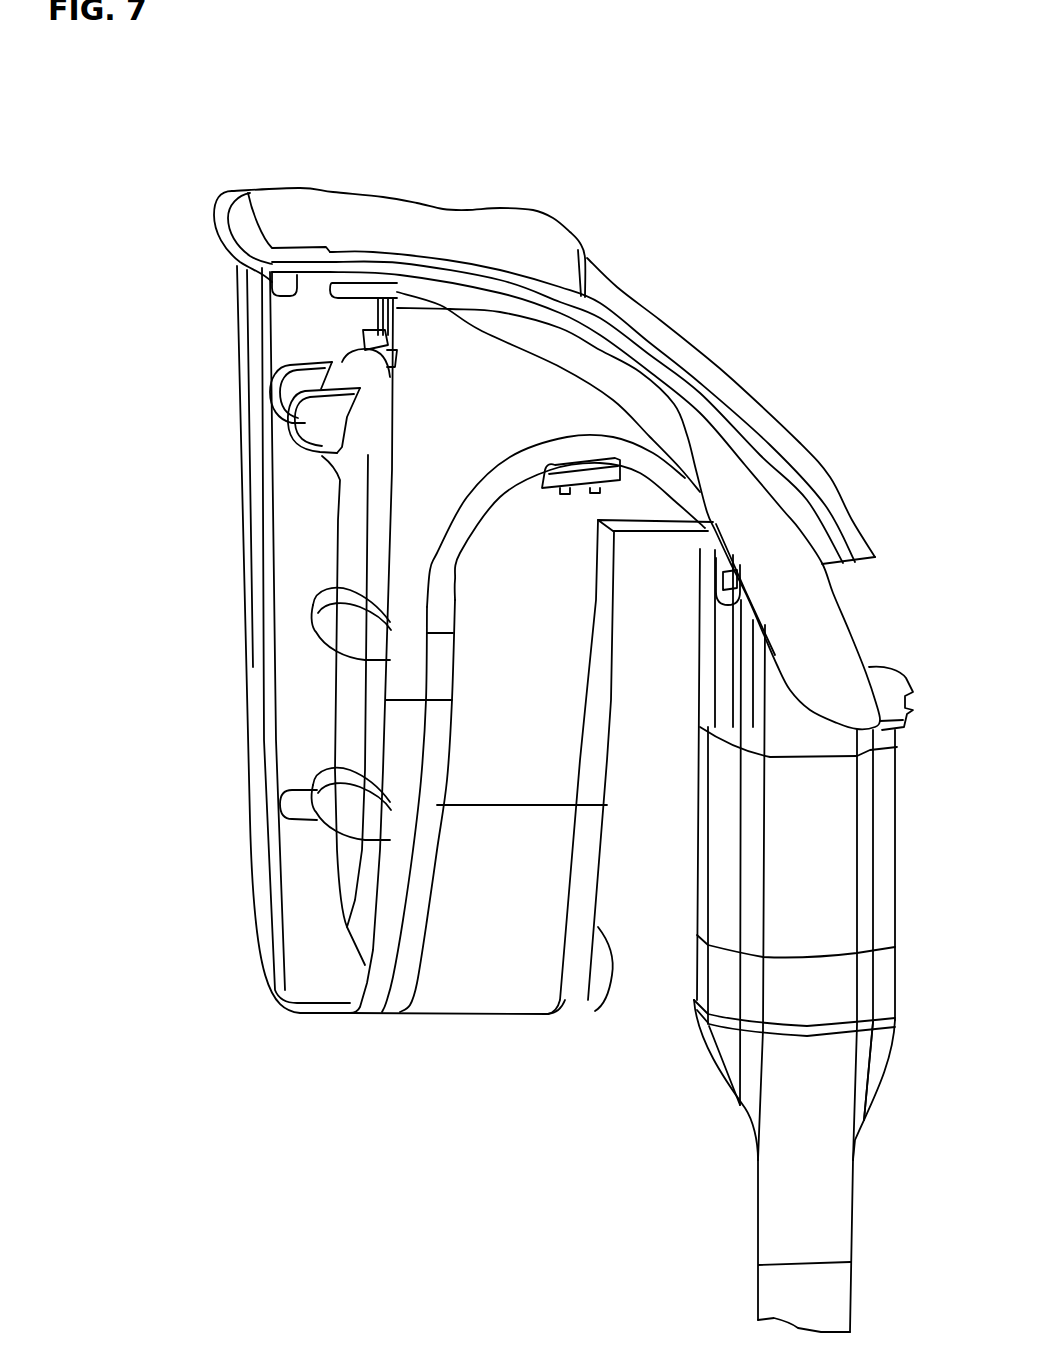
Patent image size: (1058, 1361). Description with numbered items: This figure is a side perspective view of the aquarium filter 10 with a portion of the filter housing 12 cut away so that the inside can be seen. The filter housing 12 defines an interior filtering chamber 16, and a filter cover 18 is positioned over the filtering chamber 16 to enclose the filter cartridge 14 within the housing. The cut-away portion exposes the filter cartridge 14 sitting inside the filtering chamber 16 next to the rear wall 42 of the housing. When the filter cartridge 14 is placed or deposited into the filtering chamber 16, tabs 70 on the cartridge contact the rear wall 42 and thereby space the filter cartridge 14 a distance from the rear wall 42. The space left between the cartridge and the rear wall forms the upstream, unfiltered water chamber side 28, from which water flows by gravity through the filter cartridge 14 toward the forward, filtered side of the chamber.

The aquarium filter 10 is at (657, 174).
The filter housing 12 is at (547, 987).
The filter cartridge 14 is at (337, 353).
The interior filtering chamber 16 is at (333, 573).
The filter cover 18 is at (607, 286).
The upstream, unfiltered water chamber side 28 is at (323, 721).
The rear wall 42 is at (298, 487).
The tabs 70 is at (303, 413).